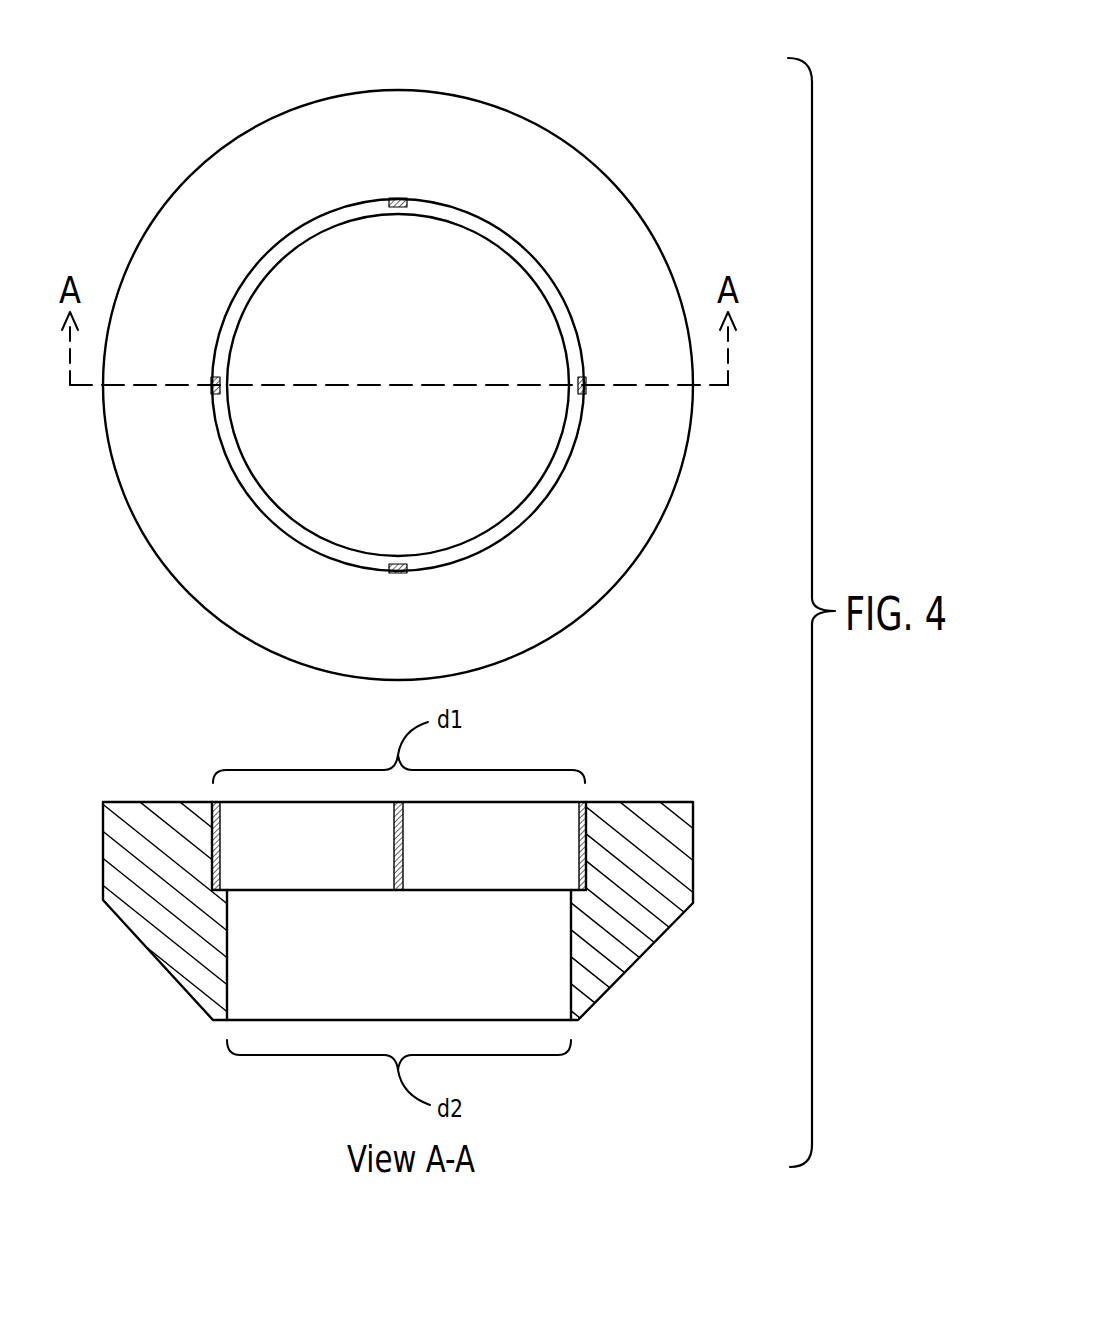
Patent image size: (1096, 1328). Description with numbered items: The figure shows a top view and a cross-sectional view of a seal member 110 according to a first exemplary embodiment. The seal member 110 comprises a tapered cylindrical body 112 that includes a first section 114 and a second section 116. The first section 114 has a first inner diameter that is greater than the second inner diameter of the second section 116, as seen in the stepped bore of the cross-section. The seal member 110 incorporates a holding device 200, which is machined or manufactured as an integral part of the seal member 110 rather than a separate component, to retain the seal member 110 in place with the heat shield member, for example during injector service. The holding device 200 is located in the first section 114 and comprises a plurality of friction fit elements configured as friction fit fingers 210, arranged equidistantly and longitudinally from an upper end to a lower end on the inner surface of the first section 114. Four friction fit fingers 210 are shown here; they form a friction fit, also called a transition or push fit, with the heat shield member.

The seal member 110 is at (615, 63).
The tapered cylindrical body 112 is at (103, 848).
The first section 114 is at (272, 528).
The second section 116 is at (533, 488).
The holding device 200 is at (600, 847).
The friction fit fingers 210 is at (399, 197).